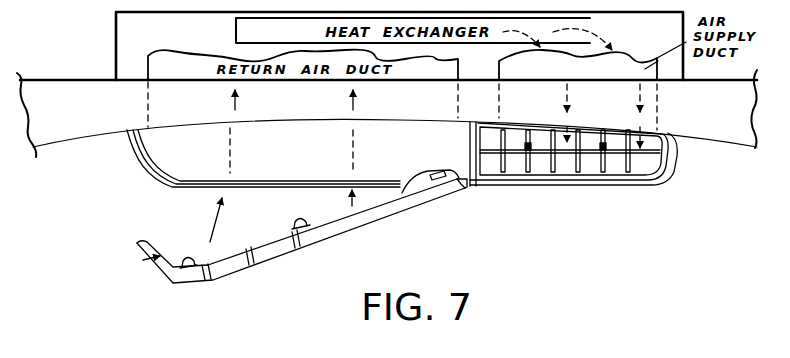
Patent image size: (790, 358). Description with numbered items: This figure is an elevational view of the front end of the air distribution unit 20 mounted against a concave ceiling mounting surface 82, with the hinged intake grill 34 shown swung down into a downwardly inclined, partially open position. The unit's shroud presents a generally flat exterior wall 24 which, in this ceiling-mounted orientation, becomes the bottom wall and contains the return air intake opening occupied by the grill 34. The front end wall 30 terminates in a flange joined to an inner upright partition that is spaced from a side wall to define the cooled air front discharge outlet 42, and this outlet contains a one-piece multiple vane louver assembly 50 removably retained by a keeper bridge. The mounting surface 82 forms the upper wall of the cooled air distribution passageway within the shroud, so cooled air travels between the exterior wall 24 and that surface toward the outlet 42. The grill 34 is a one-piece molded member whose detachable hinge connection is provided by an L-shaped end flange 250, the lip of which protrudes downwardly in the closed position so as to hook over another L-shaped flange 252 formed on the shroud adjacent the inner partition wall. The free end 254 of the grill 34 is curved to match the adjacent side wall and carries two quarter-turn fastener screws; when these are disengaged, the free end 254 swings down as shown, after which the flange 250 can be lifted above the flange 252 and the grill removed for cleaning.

The air distribution unit 20 is at (628, 190).
The exterior wall 24 is at (514, 185).
The front end wall 30 is at (193, 140).
The grill 34 is at (281, 260).
The cooled air front discharge outlet 42 is at (539, 136).
The multiple vane louver assembly 50 is at (587, 149).
The mounting surface 82 is at (300, 127).
The L-shaped end flange 250 is at (462, 175).
The L-shaped flange 252 is at (466, 190).
The free end 254 is at (138, 243).